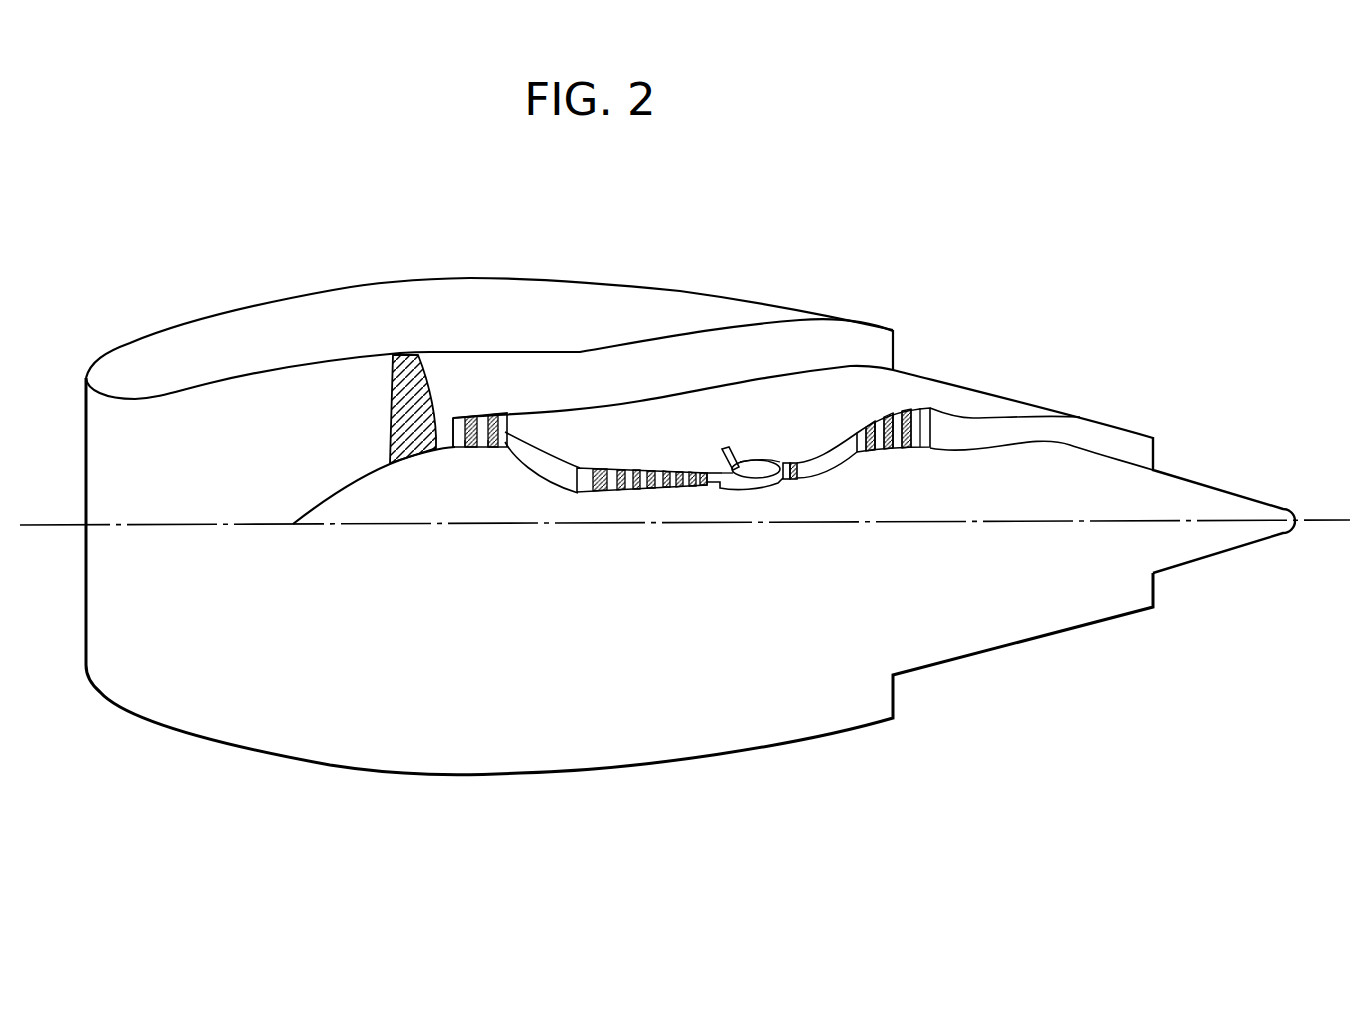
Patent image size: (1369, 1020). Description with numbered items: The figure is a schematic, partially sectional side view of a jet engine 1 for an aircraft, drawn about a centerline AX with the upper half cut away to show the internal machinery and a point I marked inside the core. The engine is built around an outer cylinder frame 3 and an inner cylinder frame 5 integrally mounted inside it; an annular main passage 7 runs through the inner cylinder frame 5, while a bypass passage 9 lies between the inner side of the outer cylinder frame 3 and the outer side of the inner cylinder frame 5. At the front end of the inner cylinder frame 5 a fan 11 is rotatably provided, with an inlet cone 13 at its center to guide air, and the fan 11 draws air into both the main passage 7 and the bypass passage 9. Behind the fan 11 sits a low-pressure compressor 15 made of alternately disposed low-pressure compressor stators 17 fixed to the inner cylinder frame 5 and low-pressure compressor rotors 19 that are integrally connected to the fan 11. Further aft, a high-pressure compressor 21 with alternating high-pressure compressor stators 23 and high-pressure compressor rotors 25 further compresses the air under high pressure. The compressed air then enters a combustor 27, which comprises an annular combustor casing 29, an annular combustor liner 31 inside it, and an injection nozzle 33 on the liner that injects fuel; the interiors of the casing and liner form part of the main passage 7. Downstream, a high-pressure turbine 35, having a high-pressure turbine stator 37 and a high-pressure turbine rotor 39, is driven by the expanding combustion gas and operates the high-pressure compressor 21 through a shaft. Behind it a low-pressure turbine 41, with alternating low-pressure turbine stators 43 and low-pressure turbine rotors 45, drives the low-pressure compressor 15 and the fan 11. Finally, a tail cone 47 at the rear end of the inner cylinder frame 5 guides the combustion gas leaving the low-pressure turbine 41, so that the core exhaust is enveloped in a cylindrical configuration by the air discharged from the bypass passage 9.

The jet engine 1 is at (792, 264).
The outer cylinder frame 3 is at (329, 290).
The inner cylinder frame 5 is at (688, 384).
The main passage 7 is at (541, 472).
The bypass passage 9 is at (582, 368).
The fan 11 is at (390, 408).
The inlet cone 13 is at (321, 503).
The low-pressure compressor 15 is at (503, 413).
The low-pressure compressor stators 17 is at (458, 418).
The low-pressure compressor rotors 19 is at (484, 450).
The high-pressure compressor 21 is at (641, 455).
The high-pressure compressor stators 23 is at (614, 466).
The high-pressure compressor rotors 25 is at (621, 495).
The combustor 27 is at (733, 437).
The combustor casing 29 is at (722, 472).
The combustor liner 31 is at (765, 460).
The injection nozzle 33 is at (728, 460).
The high-pressure turbine 35 is at (778, 537).
The high-pressure turbine stator 37 is at (781, 486).
The high-pressure turbine rotor 39 is at (808, 513).
The low-pressure turbine 41 is at (916, 388).
The low-pressure turbine stators 43 is at (878, 418).
The low-pressure turbine rotors 45 is at (903, 442).
The tail cone 47 is at (1229, 490).
The engine axis AX is at (493, 532).
The reference position I is at (803, 457).